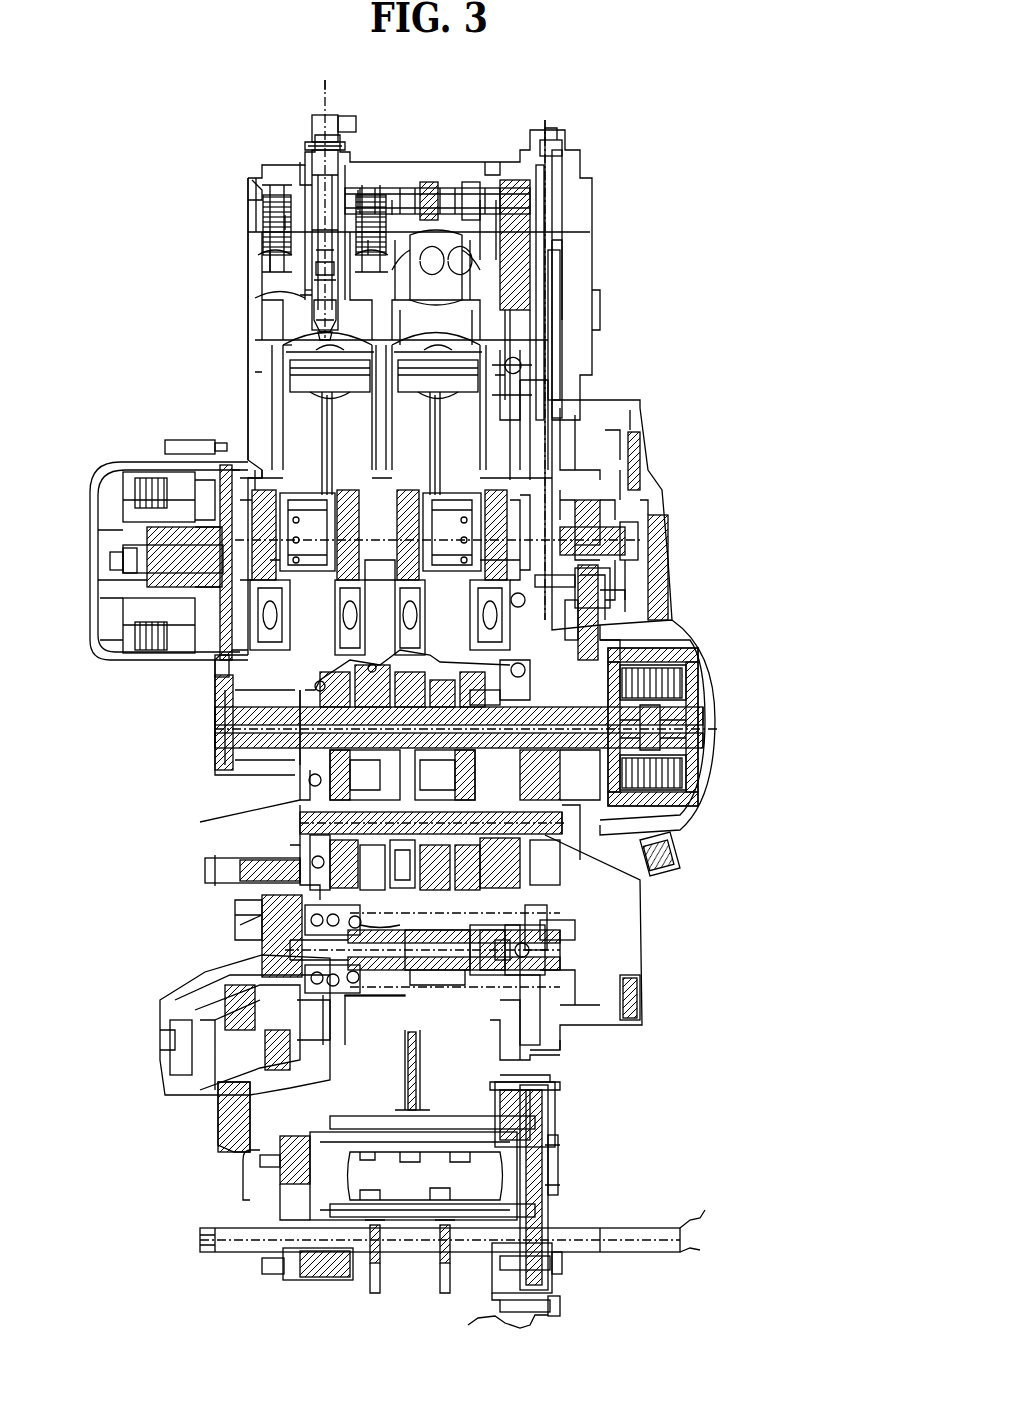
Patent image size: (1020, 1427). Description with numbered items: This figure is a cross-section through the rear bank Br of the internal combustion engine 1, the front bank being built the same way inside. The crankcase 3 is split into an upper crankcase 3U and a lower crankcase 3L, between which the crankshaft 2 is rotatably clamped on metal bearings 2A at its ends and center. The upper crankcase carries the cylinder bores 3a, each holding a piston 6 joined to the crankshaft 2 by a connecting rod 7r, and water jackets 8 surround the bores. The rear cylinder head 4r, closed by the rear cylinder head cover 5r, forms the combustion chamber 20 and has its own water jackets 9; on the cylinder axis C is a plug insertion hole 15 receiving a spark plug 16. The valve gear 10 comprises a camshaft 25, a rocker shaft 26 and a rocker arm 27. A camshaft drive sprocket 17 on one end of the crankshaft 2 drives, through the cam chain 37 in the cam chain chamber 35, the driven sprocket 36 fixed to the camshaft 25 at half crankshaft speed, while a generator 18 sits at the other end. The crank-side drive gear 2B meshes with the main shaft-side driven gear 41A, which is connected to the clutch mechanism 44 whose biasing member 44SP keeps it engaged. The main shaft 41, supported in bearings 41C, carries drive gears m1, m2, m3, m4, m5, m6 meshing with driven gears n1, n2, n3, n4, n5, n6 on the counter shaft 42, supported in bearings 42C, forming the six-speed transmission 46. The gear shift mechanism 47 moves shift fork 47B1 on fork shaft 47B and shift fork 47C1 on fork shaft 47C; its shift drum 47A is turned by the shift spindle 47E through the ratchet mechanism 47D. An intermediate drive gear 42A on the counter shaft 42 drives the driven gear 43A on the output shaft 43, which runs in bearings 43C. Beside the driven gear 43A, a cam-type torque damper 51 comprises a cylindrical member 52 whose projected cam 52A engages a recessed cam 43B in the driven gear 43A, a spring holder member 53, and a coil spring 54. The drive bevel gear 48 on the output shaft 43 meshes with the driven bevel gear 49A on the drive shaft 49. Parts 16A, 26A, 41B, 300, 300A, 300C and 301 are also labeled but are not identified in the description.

The internal combustion engine 1 is at (672, 142).
The crankshaft 2 is at (632, 535).
The metal bearings 2A is at (248, 520).
The crank-side drive gear 2B is at (590, 495).
The crankcase 3 is at (270, 832).
The cylinder bores 3a is at (276, 428).
The upper crankcase 3U is at (588, 335).
The lower crankcase 3L is at (612, 1042).
The rear cylinder head 4r is at (565, 215).
The rear cylinder head cover 5r is at (492, 158).
The pistons 6 is at (345, 392).
The connecting rod 7r is at (326, 445).
The water jackets 8 is at (255, 372).
The water jackets 9 is at (368, 240).
The valve gears 10 is at (452, 168).
The plug insertion hole 15 is at (305, 290).
The spark plug 16 is at (305, 330).
The injector connector 16A is at (350, 116).
The camshaft drive sprocket 17 is at (628, 588).
The generator 18 is at (116, 473).
The combustion chambers 20 is at (290, 345).
The camshaft 25 is at (466, 178).
The rocker shaft 26 is at (392, 200).
The valve lifter 26A is at (358, 190).
The rocker arm 27 is at (252, 180).
The cam chain chamber 35 is at (555, 275).
The driven sprocket 36 is at (557, 148).
The cam chain 37 is at (562, 245).
The main shaft 41 is at (720, 720).
The main shaft-side driven gear 41A is at (620, 635).
The bearing 41B is at (510, 660).
The bearings 41C is at (512, 598).
The counter shaft 42 is at (532, 856).
The intermediate drive gear 42A is at (560, 882).
The bearings 42C is at (305, 790).
The output shaft 43 is at (580, 1002).
The driven gear 43A is at (575, 1032).
The recessed cam 43B is at (565, 1048).
The bearings 43C is at (322, 1005).
The clutch mechanism 44 is at (699, 666).
The biasing member 44SP is at (692, 778).
The transmission 46 is at (548, 922).
The gear shift mechanism 47 is at (202, 1213).
The shift drum 47A is at (545, 1138).
The fork shaft 47B is at (490, 1120).
The shift fork 47B1 is at (412, 1075).
The fork shaft 47C is at (545, 1210).
The shift fork 47C1 is at (445, 1290).
The ratchet mechanism 47D is at (560, 1165).
The shift spindle 47E is at (578, 1248).
The drive bevel gear 48 is at (285, 922).
The drive shaft 49 is at (218, 1115).
The driven bevel gear 49A is at (205, 988).
The cam-type torque damper 51 is at (418, 997).
The cylindrical member 52 is at (482, 950).
The projected cam 52A is at (502, 960).
The spring holder member 53 is at (342, 995).
The coil spring 54 is at (400, 990).
The fuel injector 300 is at (292, 166).
The injector body 300A is at (300, 162).
The injector head 300C is at (292, 162).
The seal 301 is at (298, 160).
The cylinder axis C is at (323, 93).
The rear bank Br is at (679, 214).
The first-speed drive gear m1 is at (498, 687).
The second-speed drive gear m2 is at (320, 672).
The third-speed drive gear m3 is at (410, 672).
The fourth-speed drive gear m4 is at (438, 672).
The fifth-speed drive gear m5 is at (465, 672).
The sixth-speed drive gear m6 is at (345, 660).
The first-speed driven gear n1 is at (463, 881).
The second-speed driven gear n2 is at (355, 878).
The third-speed driven gear n3 is at (388, 881).
The fourth-speed driven gear n4 is at (415, 871).
The fifth-speed driven gear n5 is at (442, 871).
The sixth-speed driven gear n6 is at (353, 867).